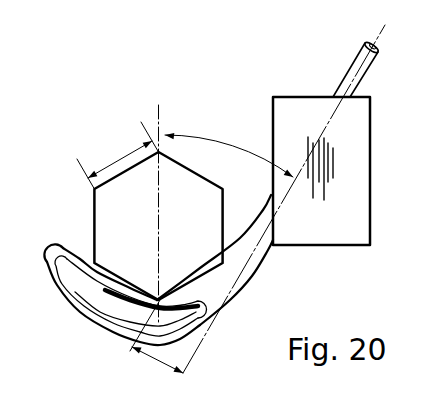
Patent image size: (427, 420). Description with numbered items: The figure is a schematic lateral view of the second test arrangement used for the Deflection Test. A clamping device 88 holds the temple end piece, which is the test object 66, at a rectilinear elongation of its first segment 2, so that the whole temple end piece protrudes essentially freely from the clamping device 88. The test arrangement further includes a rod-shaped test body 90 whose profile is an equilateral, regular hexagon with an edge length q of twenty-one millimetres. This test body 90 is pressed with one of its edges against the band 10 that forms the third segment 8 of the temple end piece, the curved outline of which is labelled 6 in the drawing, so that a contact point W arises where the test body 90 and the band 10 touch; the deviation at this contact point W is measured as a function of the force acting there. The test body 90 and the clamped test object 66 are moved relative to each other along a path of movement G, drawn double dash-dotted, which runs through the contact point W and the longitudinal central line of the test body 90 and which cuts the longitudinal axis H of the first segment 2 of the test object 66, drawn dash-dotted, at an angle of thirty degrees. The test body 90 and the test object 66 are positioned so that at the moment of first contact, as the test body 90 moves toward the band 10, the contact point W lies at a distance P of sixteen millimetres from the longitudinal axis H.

The first segment 2 is at (275, 237).
The curved blade band 6 is at (117, 330).
The third segment 8 is at (85, 287).
The band 10 is at (107, 297).
The test object 66 is at (252, 282).
The clamping device 88 is at (333, 202).
The rod-shaped test body 90 is at (110, 218).
The path of movement G is at (159, 122).
The edge length q is at (118, 155).
The contact point W is at (157, 299).
The distance P is at (257, 206).
The longitudinal axis H is at (327, 120).